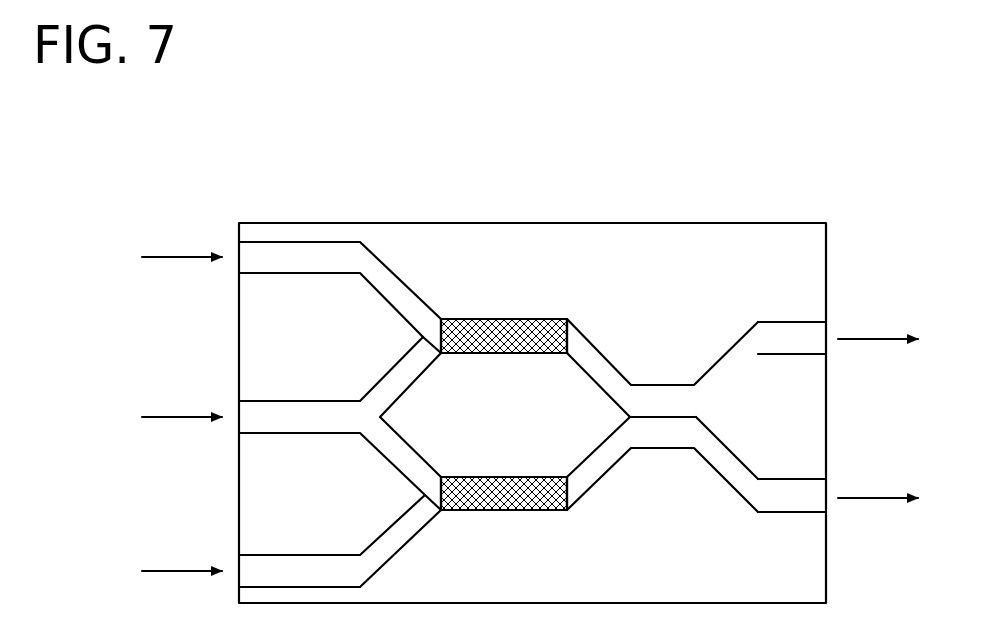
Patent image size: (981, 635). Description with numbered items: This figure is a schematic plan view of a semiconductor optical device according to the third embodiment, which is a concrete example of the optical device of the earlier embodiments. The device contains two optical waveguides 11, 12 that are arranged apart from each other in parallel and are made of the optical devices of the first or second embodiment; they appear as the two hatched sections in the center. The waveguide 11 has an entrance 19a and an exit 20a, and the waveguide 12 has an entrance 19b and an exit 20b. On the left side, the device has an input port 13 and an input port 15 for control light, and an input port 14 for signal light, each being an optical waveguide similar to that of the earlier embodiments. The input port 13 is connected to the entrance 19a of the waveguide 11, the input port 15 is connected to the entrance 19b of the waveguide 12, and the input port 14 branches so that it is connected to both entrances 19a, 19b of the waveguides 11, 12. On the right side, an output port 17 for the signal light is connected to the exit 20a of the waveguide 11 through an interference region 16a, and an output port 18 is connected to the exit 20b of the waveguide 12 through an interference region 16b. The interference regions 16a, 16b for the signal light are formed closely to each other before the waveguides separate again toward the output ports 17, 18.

The input port for control light 13 is at (281, 254).
The input port for signal light 14 is at (285, 412).
The input port for control light 15 is at (282, 569).
The optical waveguide 11 is at (503, 319).
The optical waveguide 12 is at (500, 513).
The entrance 19a is at (437, 327).
The entrance 19b is at (436, 512).
The exit 20a is at (581, 328).
The exit 20b is at (574, 510).
The interference region 16a is at (660, 402).
The interference region 16b is at (663, 437).
The output port for signal light 17 is at (785, 330).
The output port for signal light 18 is at (790, 493).